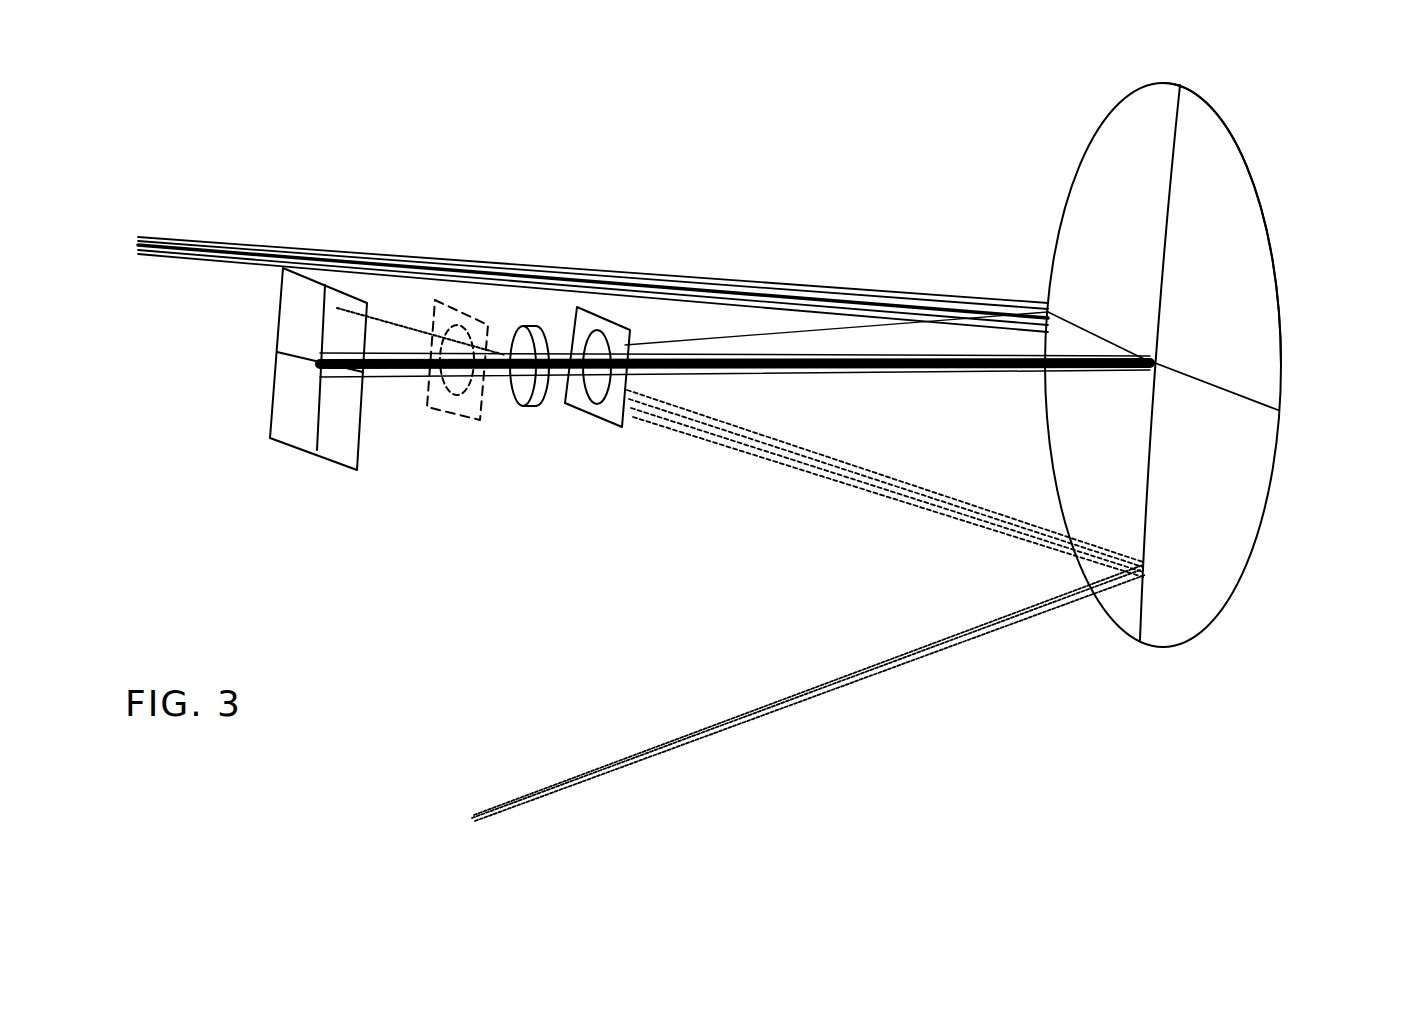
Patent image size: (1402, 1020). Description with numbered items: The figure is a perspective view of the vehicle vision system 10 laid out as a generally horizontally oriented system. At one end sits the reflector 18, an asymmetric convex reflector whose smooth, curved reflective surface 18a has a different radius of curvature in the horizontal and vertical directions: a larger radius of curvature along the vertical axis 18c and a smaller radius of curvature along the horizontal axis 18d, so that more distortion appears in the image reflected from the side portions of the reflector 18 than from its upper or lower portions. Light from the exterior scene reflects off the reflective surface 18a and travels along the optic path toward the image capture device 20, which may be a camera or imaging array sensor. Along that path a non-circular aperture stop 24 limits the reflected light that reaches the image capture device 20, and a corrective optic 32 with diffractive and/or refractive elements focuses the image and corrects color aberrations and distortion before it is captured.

The vehicle vision system 10 is at (790, 115).
The reflective element 18 is at (1258, 250).
The curved reflective surface 18a is at (1227, 190).
The vertical axis 18c is at (1167, 233).
The horizontal axis 18d is at (1237, 393).
The image capture device 20 is at (295, 432).
The non-circular aperture stop 24 is at (437, 410).
The corrective optic 32 is at (533, 407).